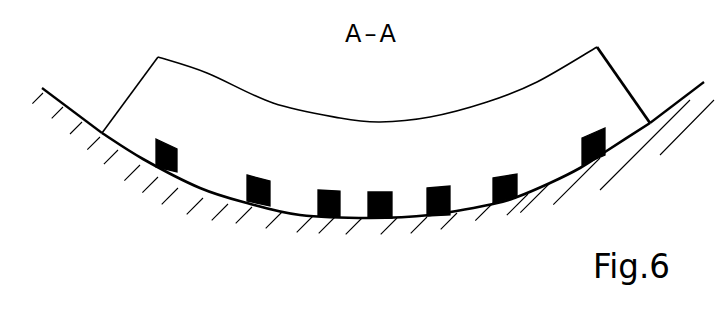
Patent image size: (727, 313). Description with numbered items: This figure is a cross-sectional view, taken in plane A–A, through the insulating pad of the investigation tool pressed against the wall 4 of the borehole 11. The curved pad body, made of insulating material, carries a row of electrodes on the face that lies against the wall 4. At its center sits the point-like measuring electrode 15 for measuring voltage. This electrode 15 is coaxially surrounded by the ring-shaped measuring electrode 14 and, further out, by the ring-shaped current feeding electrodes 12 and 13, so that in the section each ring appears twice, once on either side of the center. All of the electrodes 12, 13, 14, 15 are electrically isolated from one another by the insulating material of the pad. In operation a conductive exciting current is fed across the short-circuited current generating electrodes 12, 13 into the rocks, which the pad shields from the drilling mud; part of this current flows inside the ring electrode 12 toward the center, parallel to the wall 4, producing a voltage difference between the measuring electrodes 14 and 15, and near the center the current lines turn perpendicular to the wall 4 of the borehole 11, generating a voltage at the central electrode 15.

The wall of the borehole 4 is at (72, 110).
The borehole 11 is at (376, 129).
The ring-shaped current generating electrode 12 is at (270, 160).
The ring-shaped current generating electrode 13 is at (180, 124).
The ring-shaped measuring electrode 14 is at (340, 174).
The point-like measuring electrode 15 is at (391, 175).